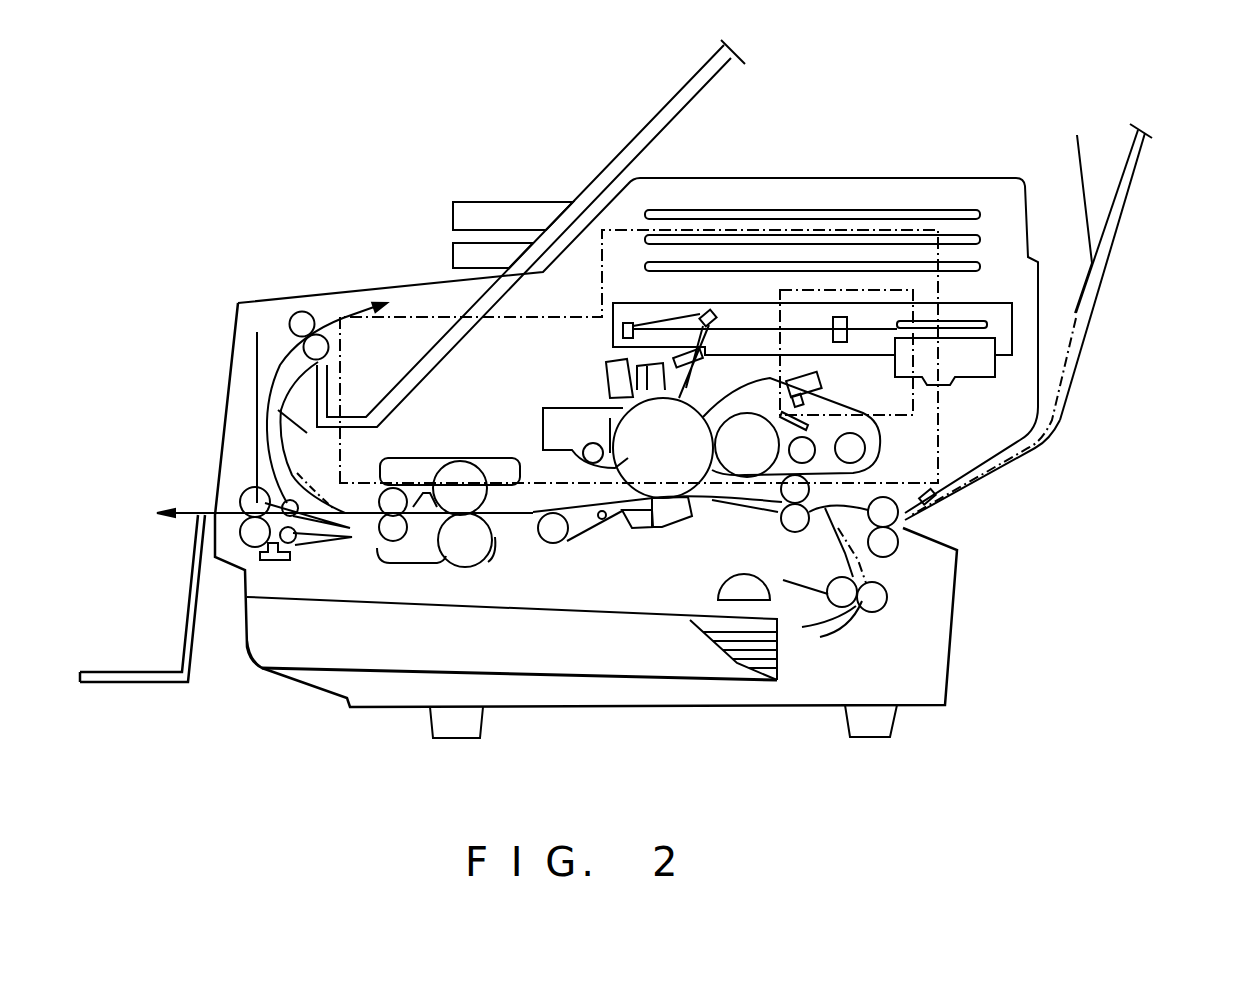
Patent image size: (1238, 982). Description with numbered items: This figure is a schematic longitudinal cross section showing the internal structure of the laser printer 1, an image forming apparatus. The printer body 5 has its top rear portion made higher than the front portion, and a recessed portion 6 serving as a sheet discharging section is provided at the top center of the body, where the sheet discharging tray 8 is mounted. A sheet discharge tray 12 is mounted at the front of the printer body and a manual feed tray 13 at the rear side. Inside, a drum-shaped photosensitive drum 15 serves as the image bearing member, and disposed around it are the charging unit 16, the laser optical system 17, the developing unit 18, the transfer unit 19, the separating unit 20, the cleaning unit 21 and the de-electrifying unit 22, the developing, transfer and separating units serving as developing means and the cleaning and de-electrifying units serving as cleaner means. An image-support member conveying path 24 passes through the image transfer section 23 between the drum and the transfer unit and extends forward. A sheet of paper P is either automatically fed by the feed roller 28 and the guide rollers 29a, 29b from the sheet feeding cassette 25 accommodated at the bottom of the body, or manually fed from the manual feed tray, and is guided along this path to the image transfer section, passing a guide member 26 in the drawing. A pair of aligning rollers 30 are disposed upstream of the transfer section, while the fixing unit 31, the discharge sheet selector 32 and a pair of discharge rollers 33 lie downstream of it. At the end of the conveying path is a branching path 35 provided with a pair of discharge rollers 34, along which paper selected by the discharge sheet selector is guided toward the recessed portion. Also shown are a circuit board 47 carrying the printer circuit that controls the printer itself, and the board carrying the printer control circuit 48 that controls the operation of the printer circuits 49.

The laser printer 1 is at (1078, 389).
The printer body 5 is at (1006, 178).
The recessed portion 6 is at (639, 356).
The sheet discharging tray 8 is at (658, 116).
The sheet discharge tray 12 is at (143, 692).
The manual feed tray 13 is at (1140, 160).
The photosensitive drum 15 is at (684, 413).
The charging unit 16 is at (640, 363).
The laser optical system 17 is at (905, 290).
The developing unit 18 is at (741, 394).
The transfer unit 19 is at (665, 528).
The separating unit 20 is at (628, 530).
The cleaning unit 21 is at (549, 408).
The de-electrifying unit 22 is at (606, 376).
The image transfer section 23 is at (663, 495).
The image-support member conveying path 24 is at (537, 510).
The sheet feeding cassette 25 is at (258, 655).
The paper guide member 26 is at (932, 490).
The feed roller 28 is at (756, 586).
The guide roller 29a is at (889, 554).
The guide roller 29b is at (873, 612).
The aligning rollers 30 is at (781, 521).
The fixing unit 31 is at (433, 456).
The discharge sheet selector 32 is at (283, 503).
The discharge rollers 33 is at (235, 507).
The discharge rollers 34 is at (300, 311).
The branching path 35 is at (315, 486).
The circuit board 47 is at (742, 232).
The printer control circuit 48 is at (818, 280).
The printer circuits 49 is at (880, 300).
The paper P is at (707, 620).